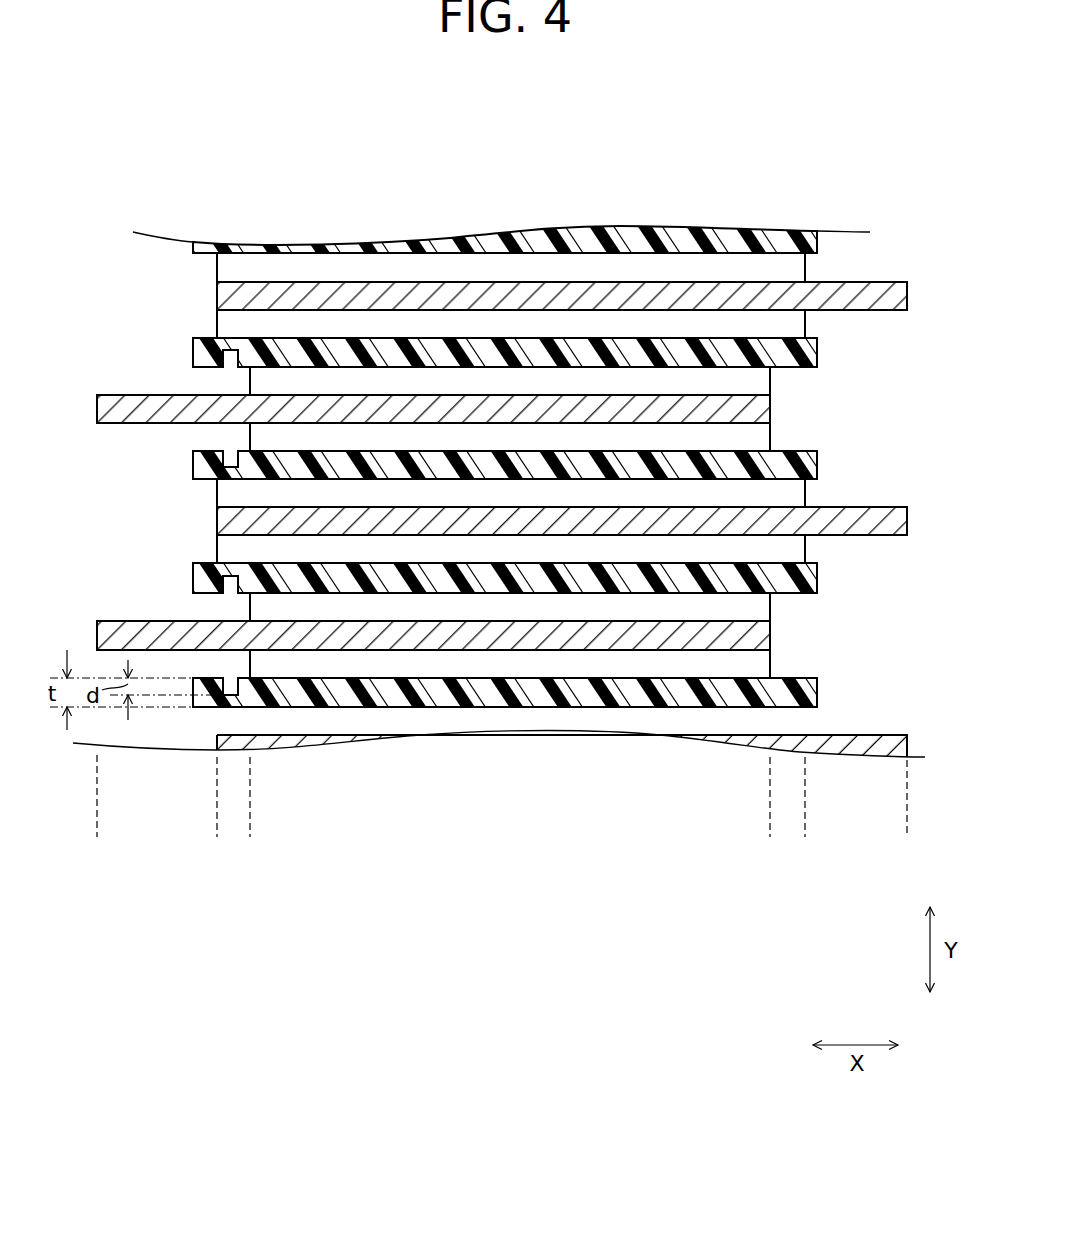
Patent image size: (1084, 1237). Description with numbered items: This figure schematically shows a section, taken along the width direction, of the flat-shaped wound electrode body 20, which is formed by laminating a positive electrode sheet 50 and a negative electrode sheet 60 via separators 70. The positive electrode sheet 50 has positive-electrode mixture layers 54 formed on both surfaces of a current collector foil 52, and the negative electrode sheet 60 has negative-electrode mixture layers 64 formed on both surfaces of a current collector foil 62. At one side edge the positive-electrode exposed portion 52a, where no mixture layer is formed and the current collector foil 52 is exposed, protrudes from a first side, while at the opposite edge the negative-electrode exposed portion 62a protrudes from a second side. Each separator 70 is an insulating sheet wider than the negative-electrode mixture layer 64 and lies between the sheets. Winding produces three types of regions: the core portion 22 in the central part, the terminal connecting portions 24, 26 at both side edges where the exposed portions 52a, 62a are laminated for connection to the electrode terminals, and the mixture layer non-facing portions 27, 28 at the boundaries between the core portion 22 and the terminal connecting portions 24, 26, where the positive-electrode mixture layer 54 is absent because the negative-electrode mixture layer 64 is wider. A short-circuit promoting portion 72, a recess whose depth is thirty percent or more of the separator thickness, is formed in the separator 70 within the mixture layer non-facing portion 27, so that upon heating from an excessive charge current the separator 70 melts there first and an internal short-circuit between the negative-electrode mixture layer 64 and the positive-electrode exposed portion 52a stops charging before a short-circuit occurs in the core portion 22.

The electrode body 20 is at (828, 142).
The core portion 22 is at (250, 797).
The terminal connecting portion (positive-electrode connecting portion) 24 is at (97, 797).
The terminal connecting portion (negative-electrode connecting portion) 26 is at (907, 797).
The mixture layer non-facing portion 27 is at (250, 822).
The mixture layer non-facing portion 28 is at (770, 822).
The positive electrode sheet 50 is at (488, 522).
The current collector foil 52 is at (772, 408).
The positive-electrode exposed portion 52a is at (100, 395).
The positive-electrode mixture layer 54 is at (772, 380).
The negative electrode sheet 60 is at (514, 497).
The current collector foil 62 is at (217, 296).
The negative-electrode exposed portion 62a is at (885, 281).
The negative-electrode mixture layer 64 is at (217, 266).
The separator 70 is at (818, 245).
The short-circuit promoting portion 72 is at (230, 369).